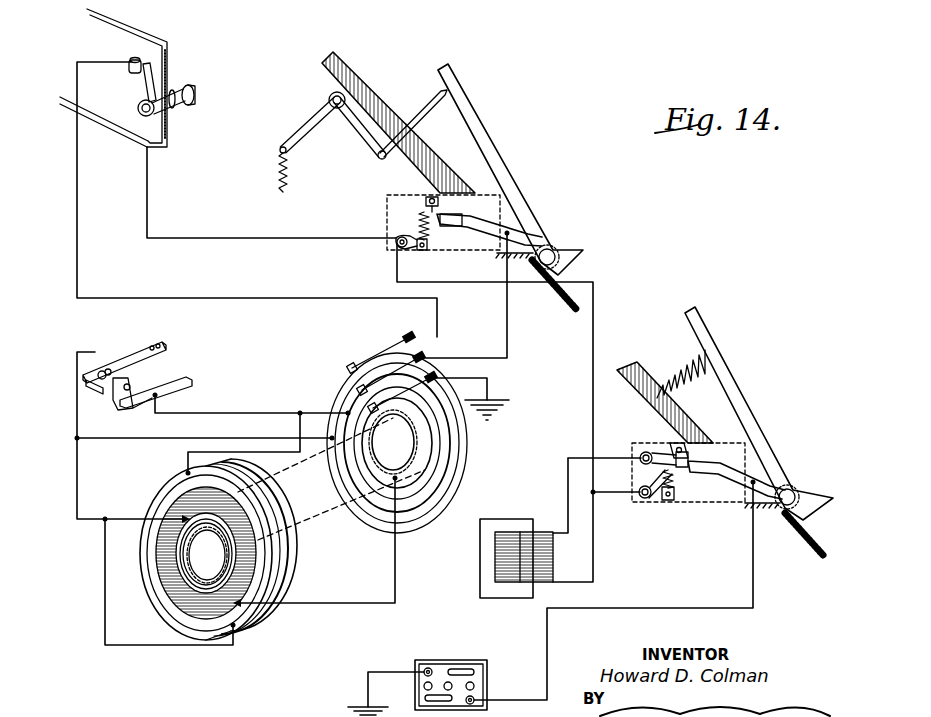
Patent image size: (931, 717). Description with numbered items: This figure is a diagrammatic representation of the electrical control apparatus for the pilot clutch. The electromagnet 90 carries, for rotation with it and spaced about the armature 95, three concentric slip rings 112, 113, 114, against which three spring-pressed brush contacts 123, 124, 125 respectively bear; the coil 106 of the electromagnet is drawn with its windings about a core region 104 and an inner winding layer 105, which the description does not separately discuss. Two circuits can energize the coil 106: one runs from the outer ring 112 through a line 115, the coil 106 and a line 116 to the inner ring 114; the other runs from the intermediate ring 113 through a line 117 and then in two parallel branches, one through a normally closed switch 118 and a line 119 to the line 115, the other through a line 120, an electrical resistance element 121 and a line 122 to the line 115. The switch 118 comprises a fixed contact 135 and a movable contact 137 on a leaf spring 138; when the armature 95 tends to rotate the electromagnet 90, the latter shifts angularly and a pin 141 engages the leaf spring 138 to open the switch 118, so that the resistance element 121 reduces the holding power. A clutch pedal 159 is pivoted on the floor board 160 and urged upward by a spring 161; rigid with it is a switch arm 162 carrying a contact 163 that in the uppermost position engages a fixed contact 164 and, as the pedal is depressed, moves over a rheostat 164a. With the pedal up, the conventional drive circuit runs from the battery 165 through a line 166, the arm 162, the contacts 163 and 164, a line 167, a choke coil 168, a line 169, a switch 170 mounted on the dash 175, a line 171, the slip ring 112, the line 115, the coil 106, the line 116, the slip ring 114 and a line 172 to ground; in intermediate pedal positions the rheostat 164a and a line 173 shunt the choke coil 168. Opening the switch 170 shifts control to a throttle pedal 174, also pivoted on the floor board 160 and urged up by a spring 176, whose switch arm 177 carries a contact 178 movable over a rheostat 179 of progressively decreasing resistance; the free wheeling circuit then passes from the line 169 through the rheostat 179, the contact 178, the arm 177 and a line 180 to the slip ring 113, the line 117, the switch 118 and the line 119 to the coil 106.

The electromagnet 90 is at (277, 625).
The armature 95 is at (296, 548).
The core 104 is at (210, 583).
The inner winding 105 is at (193, 600).
The coil 106 is at (188, 577).
The outer slip ring 112 is at (458, 445).
The intermediate slip ring 113 is at (444, 462).
The inner slip ring 114 is at (420, 473).
The line 115 is at (78, 483).
The line 116 is at (355, 603).
The line 117 is at (258, 413).
The normally closed switch 118 is at (145, 371).
The line 119 is at (92, 350).
The line 120 is at (277, 449).
The electrical resistance element 121 is at (163, 483).
The line 122 is at (175, 647).
The brush contact 123 is at (388, 348).
The brush contact 124 is at (424, 346).
The brush contact 125 is at (442, 371).
The fixed contact 135 is at (113, 386).
The movable contact 137 is at (102, 371).
The leaf spring 138 is at (137, 357).
The pin 141 is at (95, 388).
The clutch pedal 159 is at (747, 408).
The floor board 160 is at (352, 102).
The spring 161 is at (678, 370).
The switch arm 162 is at (745, 453).
The contact 163 is at (672, 446).
The fixed contact 164 is at (648, 452).
The rheostat 164a is at (675, 478).
The battery 165 is at (492, 628).
The line 166 is at (705, 608).
The line 167 is at (568, 500).
The choke coil 168 is at (508, 523).
The line 169 is at (592, 417).
The switch 170 is at (135, 71).
The line 171 is at (78, 204).
The line 172 is at (489, 383).
The line 173 is at (612, 493).
The throttle pedal 174 is at (483, 132).
The dash 175 is at (168, 58).
The spring 176 is at (278, 178).
The switch arm 177 is at (483, 227).
The contact 178 is at (426, 201).
The rheostat 179 is at (418, 224).
The line 180 is at (508, 322).